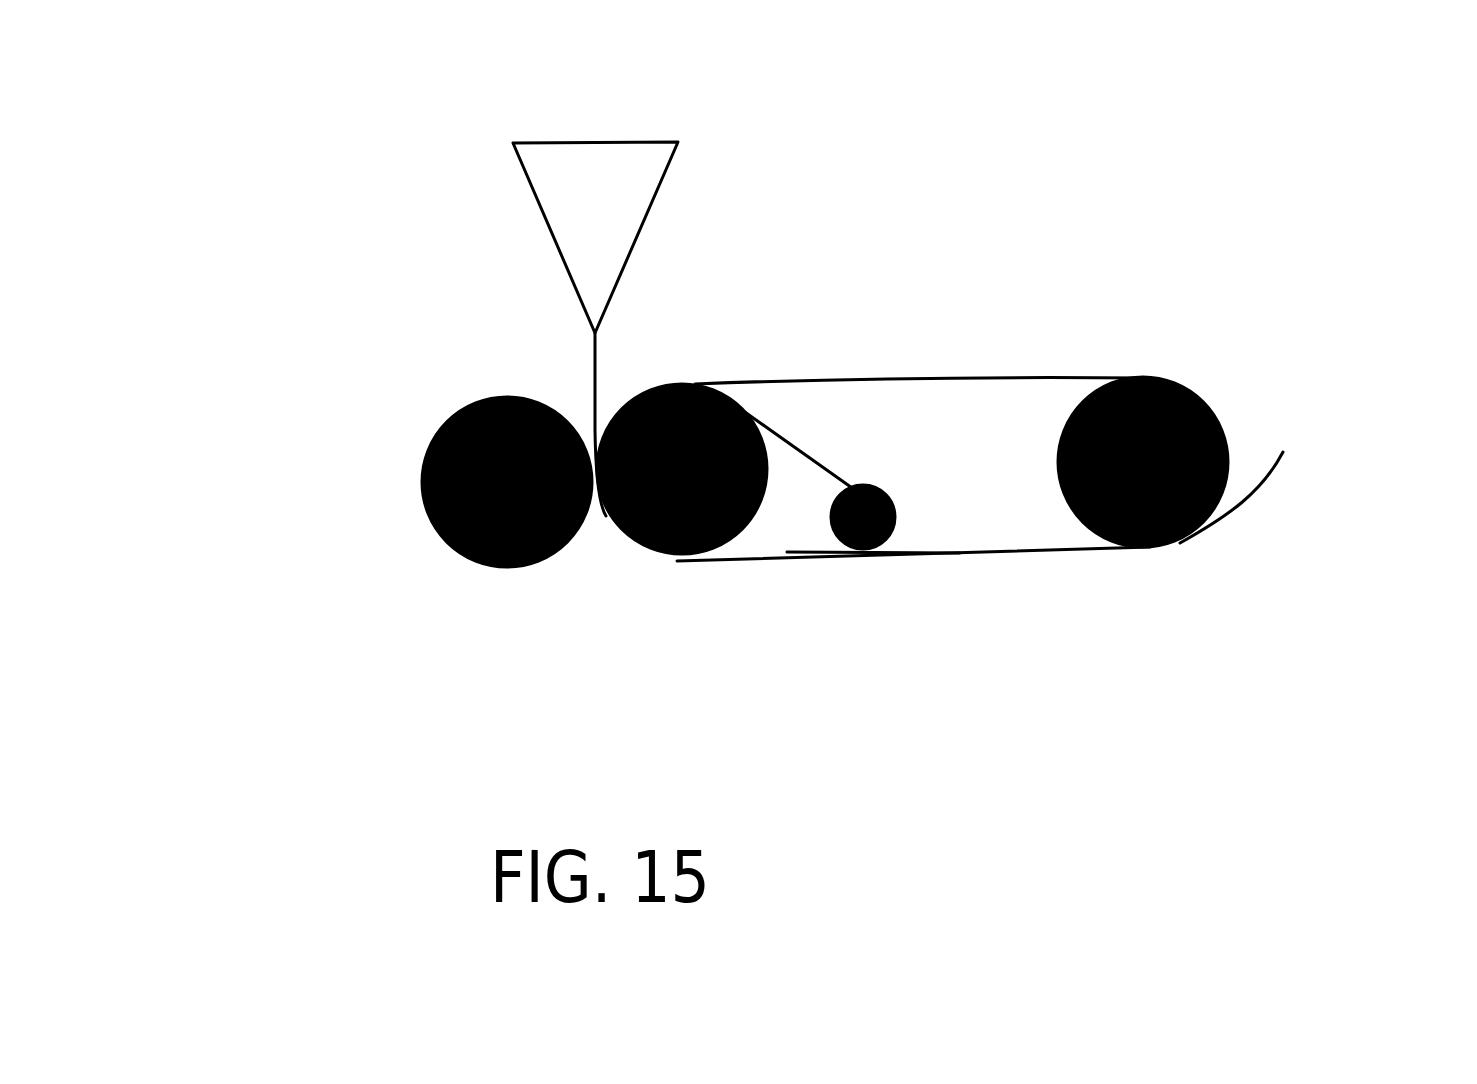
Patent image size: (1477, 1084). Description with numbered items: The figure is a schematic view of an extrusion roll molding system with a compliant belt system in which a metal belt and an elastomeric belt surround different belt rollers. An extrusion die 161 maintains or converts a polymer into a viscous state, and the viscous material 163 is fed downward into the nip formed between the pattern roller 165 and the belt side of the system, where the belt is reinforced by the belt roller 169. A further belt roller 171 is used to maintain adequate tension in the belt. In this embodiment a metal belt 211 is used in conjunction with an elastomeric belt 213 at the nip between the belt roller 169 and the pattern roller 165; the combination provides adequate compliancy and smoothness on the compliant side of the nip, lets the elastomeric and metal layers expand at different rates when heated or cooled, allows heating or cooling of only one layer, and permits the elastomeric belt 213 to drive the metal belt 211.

The extrusion die 161 is at (578, 193).
The viscous material 163 is at (592, 378).
The pattern roller 165 is at (443, 535).
The belt roller 169 is at (638, 548).
The belt roller 171 is at (1173, 377).
The metal belt 211 is at (982, 376).
The elastomeric belt 213 is at (807, 455).